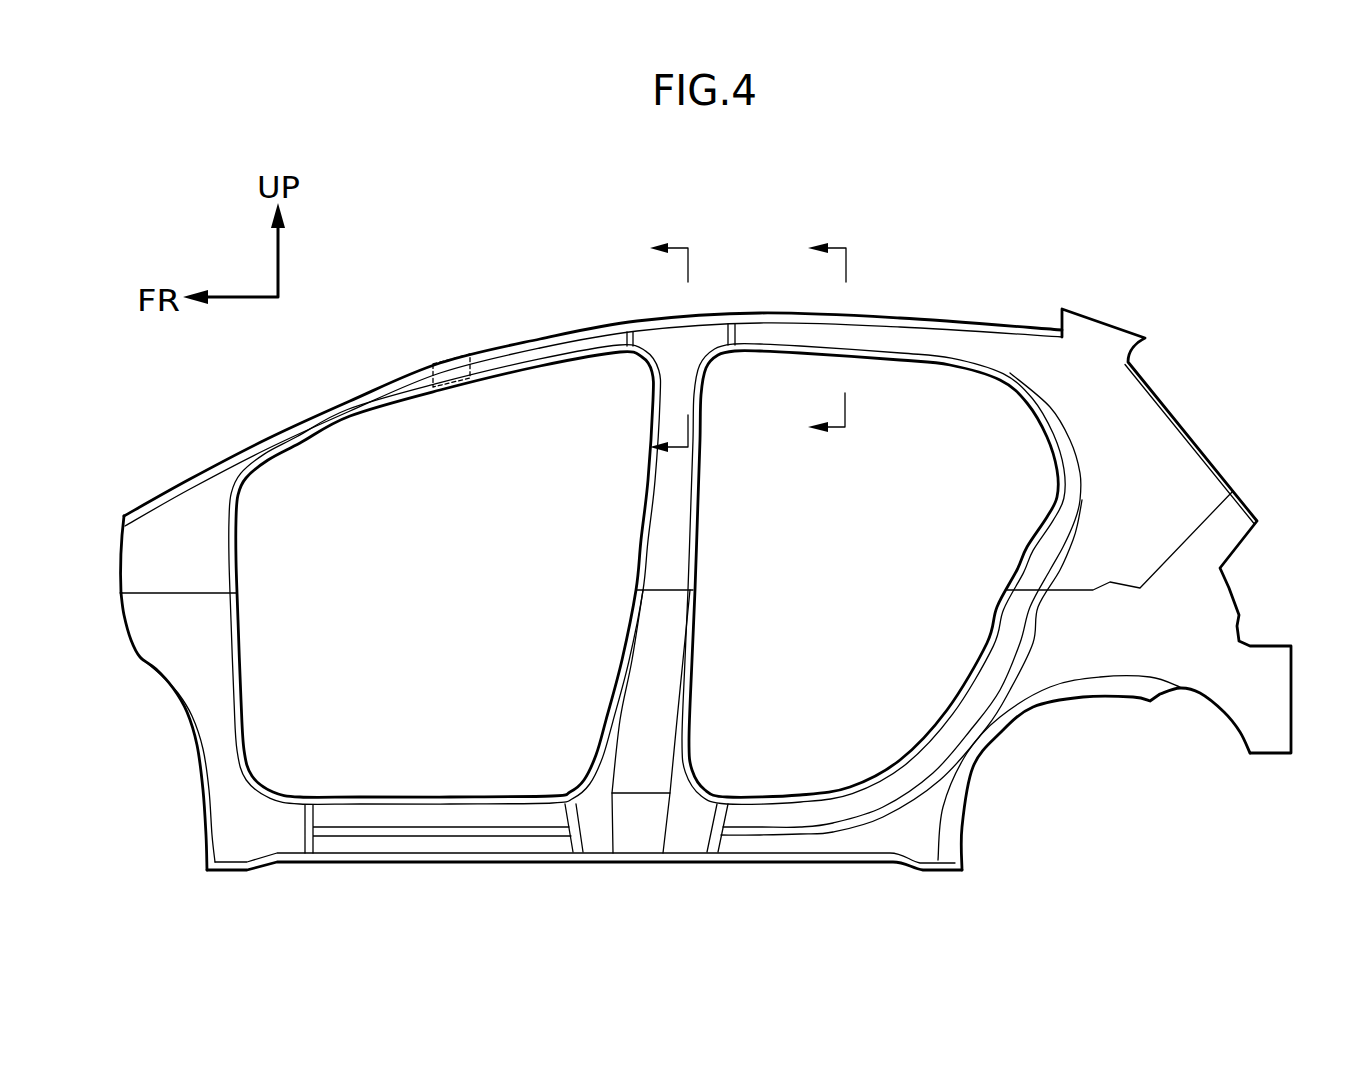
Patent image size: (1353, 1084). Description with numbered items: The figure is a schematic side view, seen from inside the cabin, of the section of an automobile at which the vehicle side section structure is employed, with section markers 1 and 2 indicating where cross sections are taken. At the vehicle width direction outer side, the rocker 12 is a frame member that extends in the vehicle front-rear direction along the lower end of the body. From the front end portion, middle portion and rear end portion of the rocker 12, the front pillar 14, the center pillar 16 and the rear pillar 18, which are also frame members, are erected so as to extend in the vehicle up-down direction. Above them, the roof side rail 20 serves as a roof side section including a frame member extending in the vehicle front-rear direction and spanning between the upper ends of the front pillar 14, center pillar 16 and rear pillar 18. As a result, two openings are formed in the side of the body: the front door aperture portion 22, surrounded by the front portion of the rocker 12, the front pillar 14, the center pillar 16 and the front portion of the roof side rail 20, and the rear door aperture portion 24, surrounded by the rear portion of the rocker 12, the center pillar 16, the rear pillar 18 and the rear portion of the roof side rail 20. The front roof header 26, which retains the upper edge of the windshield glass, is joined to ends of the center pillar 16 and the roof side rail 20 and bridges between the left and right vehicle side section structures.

The section line of FIG. 1 is at (827, 341).
The section line of FIG. 2 is at (669, 352).
The rocker 12 is at (545, 842).
The front pillar 14 is at (227, 655).
The center pillar 16 is at (682, 567).
The rear pillar 18 is at (1085, 542).
The roof side rail 20 is at (583, 343).
The front door aperture portion 22 is at (482, 605).
The rear door aperture portion 24 is at (871, 563).
The front roof header 26 is at (452, 370).